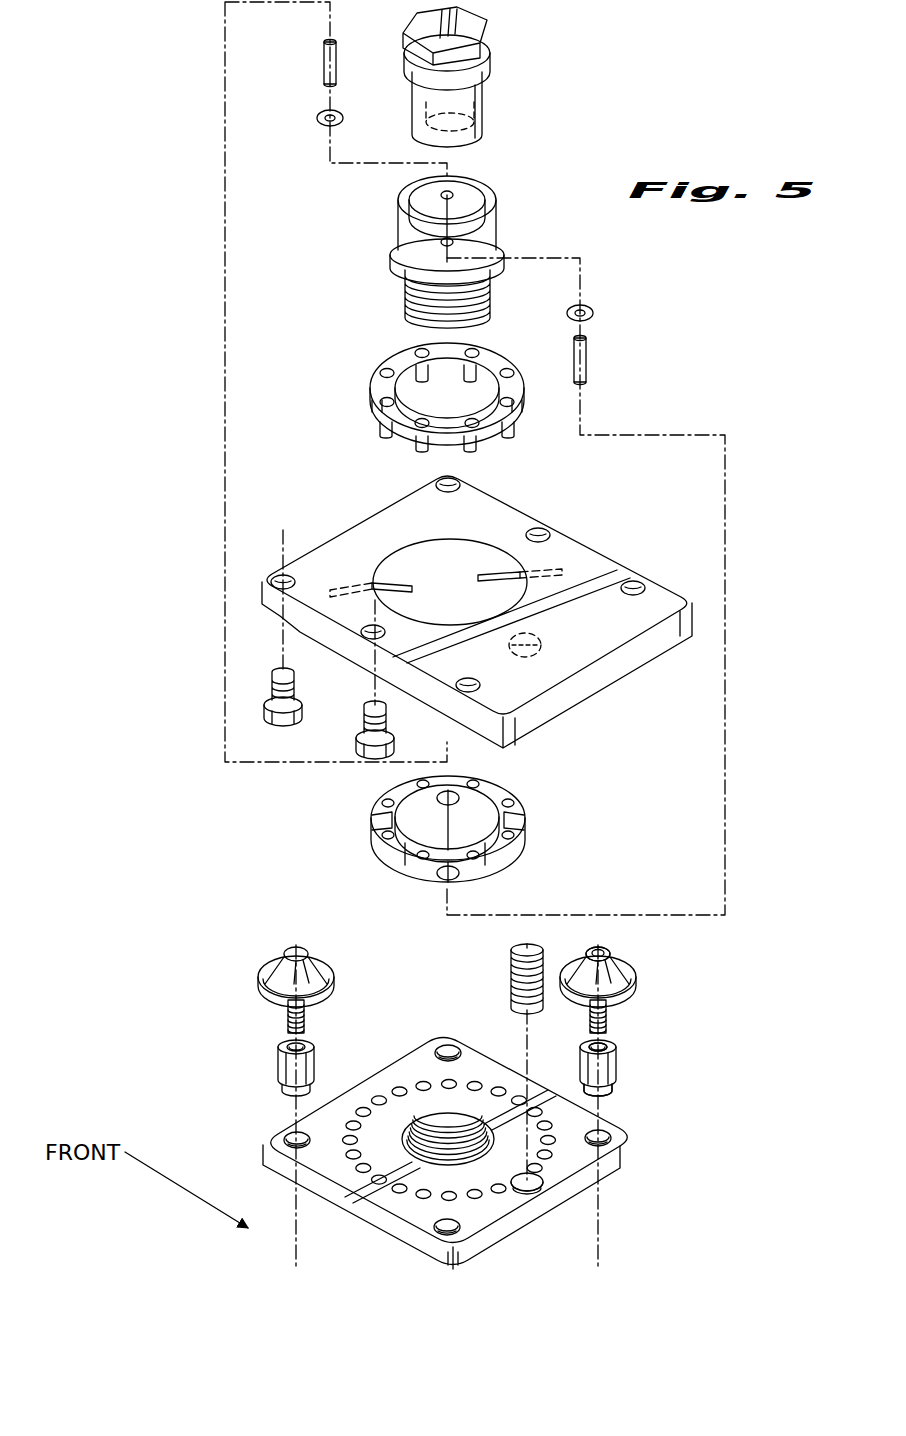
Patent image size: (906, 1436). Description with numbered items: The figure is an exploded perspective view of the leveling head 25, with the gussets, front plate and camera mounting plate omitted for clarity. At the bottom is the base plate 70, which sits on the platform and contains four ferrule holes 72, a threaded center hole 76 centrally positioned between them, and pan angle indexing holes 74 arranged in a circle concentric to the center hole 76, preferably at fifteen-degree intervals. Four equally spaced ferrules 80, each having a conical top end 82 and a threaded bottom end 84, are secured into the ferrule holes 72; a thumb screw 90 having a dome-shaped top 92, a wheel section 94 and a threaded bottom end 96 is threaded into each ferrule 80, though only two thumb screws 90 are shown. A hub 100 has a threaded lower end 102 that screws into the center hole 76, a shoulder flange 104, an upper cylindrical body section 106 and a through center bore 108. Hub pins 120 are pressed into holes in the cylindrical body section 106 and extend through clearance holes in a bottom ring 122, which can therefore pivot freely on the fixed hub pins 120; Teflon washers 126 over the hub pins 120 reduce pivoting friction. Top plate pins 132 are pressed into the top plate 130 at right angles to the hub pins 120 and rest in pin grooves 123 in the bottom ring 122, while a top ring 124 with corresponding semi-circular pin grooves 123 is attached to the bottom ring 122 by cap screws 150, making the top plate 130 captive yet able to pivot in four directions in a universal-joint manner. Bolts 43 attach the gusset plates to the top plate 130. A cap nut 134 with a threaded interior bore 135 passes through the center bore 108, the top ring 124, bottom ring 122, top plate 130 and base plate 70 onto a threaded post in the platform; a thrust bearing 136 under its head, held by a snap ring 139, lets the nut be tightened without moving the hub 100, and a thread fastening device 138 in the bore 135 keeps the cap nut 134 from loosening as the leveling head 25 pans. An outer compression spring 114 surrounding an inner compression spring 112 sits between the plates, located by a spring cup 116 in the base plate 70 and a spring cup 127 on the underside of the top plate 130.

The leveling head 25 is at (210, 543).
The bolts 43 is at (360, 741).
The base plate 70 is at (415, 1162).
The ferrule holes 72 is at (290, 1133).
The pan angle indexing holes 74 is at (360, 1108).
The threaded center hole 76 is at (455, 1160).
The ferrules 80 is at (610, 1087).
The conical top end 82 is at (590, 1046).
The threaded bottom end 84 is at (606, 1092).
The thumb screw 90 is at (450, 1032).
The dome-shaped top 92 is at (608, 950).
The wheel section 94 is at (624, 984).
The threaded bottom end 96 is at (606, 1030).
The hub 100 is at (444, 249).
The threaded lower end 102 is at (430, 308).
The shoulder flange 104 is at (398, 258).
The upper cylindrical body section 106 is at (408, 216).
The through center bore 108 is at (432, 205).
The inner compression spring 112 is at (485, 978).
The outer compression spring 114 is at (518, 938).
The spring cup 116 is at (515, 1192).
The hub pins 120 is at (325, 68).
The bottom ring 122 is at (454, 829).
The pin grooves 123 is at (525, 820).
The top ring 124 is at (438, 410).
The Teflon washers 126 is at (326, 126).
The spring cup 127 is at (543, 648).
The top plate 130 is at (477, 616).
The top plate pins 132 is at (392, 575).
The cap nut 134 is at (488, 84).
The threaded interior bore 135 is at (489, 122).
The thrust bearing 136 is at (490, 68).
The thread fastening device 138 is at (482, 111).
The snap ring 139 is at (466, 86).
The cap screws 150 is at (385, 375).